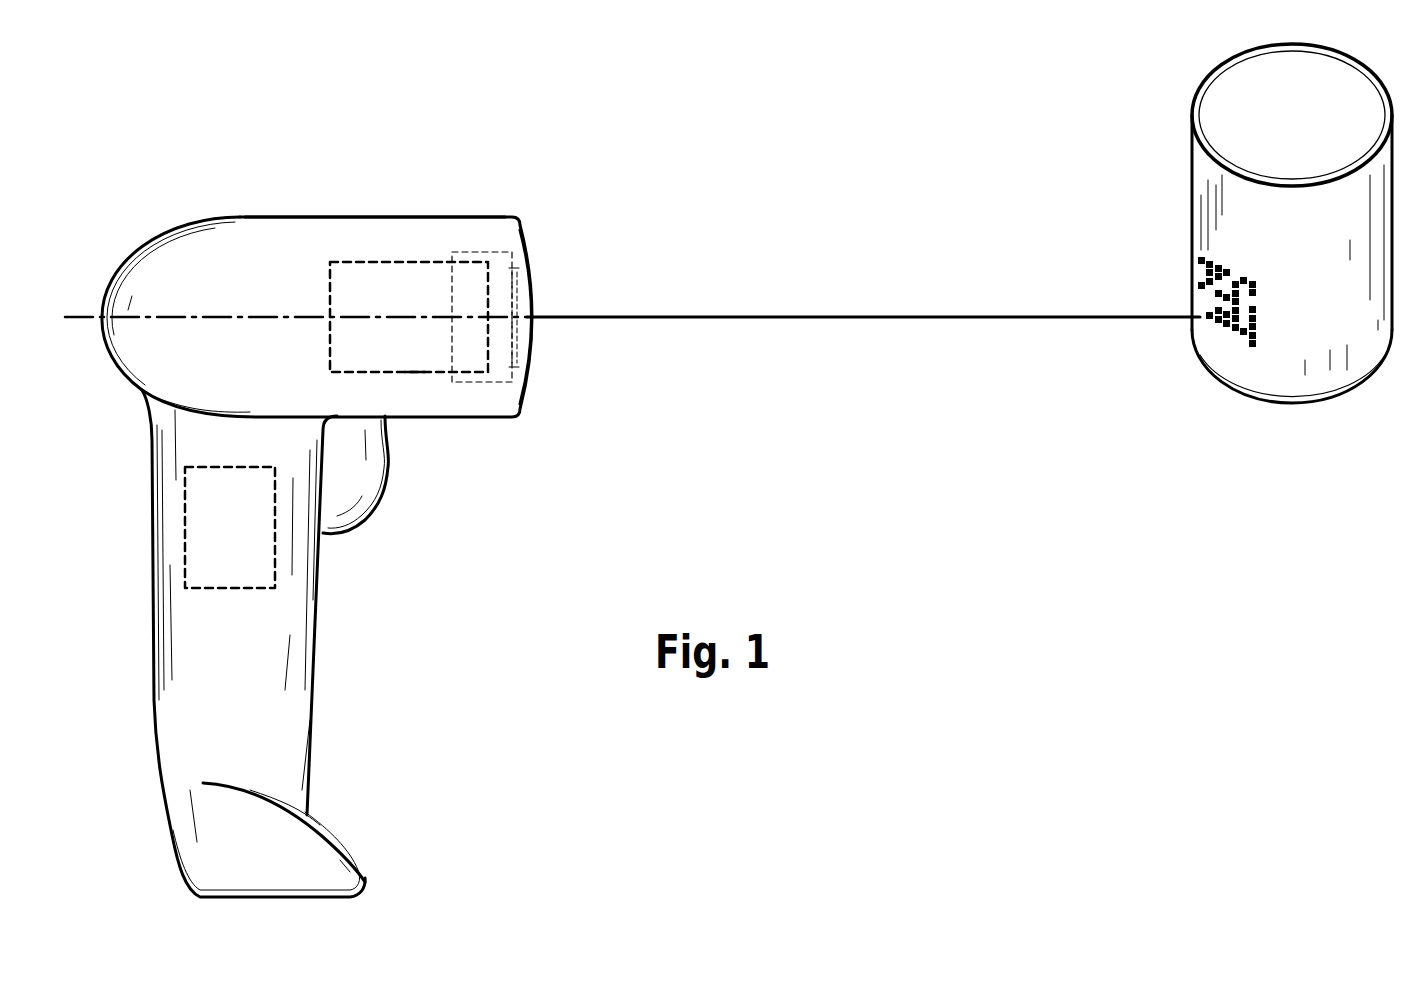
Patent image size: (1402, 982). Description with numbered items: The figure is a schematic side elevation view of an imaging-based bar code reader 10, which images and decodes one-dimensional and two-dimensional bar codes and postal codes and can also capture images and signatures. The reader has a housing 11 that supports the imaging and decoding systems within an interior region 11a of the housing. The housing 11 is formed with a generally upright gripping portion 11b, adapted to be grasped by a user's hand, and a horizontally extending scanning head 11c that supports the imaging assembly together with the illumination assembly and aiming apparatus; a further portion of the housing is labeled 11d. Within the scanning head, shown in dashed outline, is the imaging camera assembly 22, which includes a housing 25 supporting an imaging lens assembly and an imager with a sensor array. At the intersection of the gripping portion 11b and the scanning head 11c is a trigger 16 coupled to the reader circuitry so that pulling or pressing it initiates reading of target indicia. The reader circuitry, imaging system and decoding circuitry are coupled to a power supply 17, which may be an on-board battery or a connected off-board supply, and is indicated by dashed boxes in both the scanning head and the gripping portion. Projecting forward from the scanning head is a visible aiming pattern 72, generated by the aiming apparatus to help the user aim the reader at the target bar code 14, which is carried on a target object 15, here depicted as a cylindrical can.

The imaging-based bar code reader 10 is at (495, 127).
The housing 11 is at (125, 405).
The interior region 11a is at (235, 270).
The gripping portion 11b is at (170, 812).
The scanning head 11c is at (333, 217).
The housing front end 11d is at (527, 377).
The imaging camera assembly 22 is at (380, 282).
The housing 25 is at (415, 374).
The power supply 17 is at (518, 333).
The trigger 16 is at (345, 488).
The visible aiming pattern 72 is at (1097, 313).
The target bar code 14 is at (1192, 332).
The target object 15 is at (1278, 367).